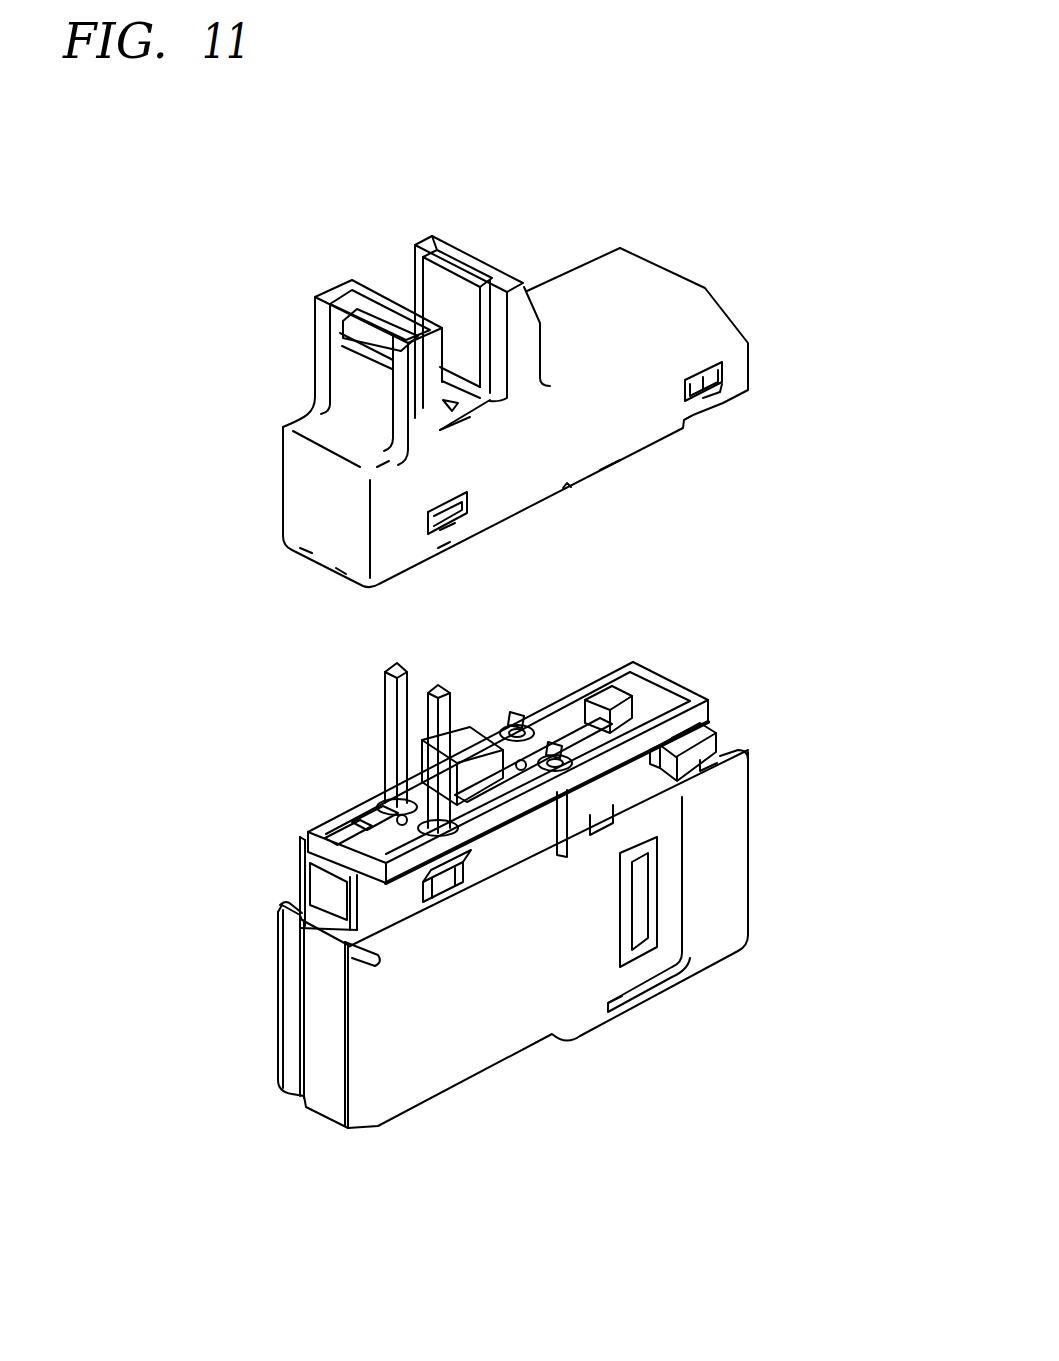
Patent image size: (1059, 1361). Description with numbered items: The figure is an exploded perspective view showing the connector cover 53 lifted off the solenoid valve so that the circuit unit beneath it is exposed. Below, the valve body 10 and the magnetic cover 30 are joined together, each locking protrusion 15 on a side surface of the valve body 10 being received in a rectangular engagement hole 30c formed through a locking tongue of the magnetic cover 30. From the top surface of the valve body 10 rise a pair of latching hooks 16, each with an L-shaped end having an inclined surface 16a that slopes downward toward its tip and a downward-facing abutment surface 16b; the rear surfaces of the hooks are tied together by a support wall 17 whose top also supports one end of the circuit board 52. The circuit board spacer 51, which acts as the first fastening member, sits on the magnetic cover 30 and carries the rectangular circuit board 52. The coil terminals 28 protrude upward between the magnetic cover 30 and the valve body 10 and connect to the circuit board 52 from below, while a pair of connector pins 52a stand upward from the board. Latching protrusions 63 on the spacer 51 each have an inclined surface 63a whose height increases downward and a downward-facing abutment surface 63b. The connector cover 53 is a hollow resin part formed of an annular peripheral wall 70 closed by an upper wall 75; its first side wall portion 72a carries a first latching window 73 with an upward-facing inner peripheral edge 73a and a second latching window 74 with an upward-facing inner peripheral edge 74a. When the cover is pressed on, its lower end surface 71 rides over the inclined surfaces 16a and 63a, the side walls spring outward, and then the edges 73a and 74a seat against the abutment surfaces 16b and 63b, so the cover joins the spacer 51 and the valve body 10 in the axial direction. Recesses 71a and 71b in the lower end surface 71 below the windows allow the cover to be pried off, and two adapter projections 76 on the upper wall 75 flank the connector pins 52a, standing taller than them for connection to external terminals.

The valve body 10 is at (527, 874).
The locking protrusion 15 is at (640, 923).
The latching hook 16 is at (740, 735).
The inclined surface 16a is at (718, 742).
The abutment surface 16b is at (700, 767).
The support wall 17 is at (660, 744).
The coil terminals 28 is at (555, 757).
The magnetic cover 30 is at (513, 958).
The engagement hole 30c is at (632, 952).
The circuit board spacer 51 is at (281, 878).
The circuit board 52 is at (483, 732).
The connector pins 52a is at (430, 732).
The connector cover 53 is at (551, 383).
The latching protrusion 63 is at (449, 928).
The inclined surface 63a is at (448, 872).
The abutment surface 63b is at (452, 913).
The peripheral wall 70 is at (714, 340).
The lower end surface 71 is at (606, 488).
The recess 71a is at (693, 418).
The recess 71b is at (443, 543).
The first side wall portion 72a is at (609, 434).
The first latching window 73 is at (722, 378).
The inner peripheral edge 73a is at (707, 392).
The second latching window 74 is at (448, 510).
The inner peripheral edge 74a is at (452, 523).
The upper wall 75 is at (578, 290).
The adapter projections 76 is at (333, 293).